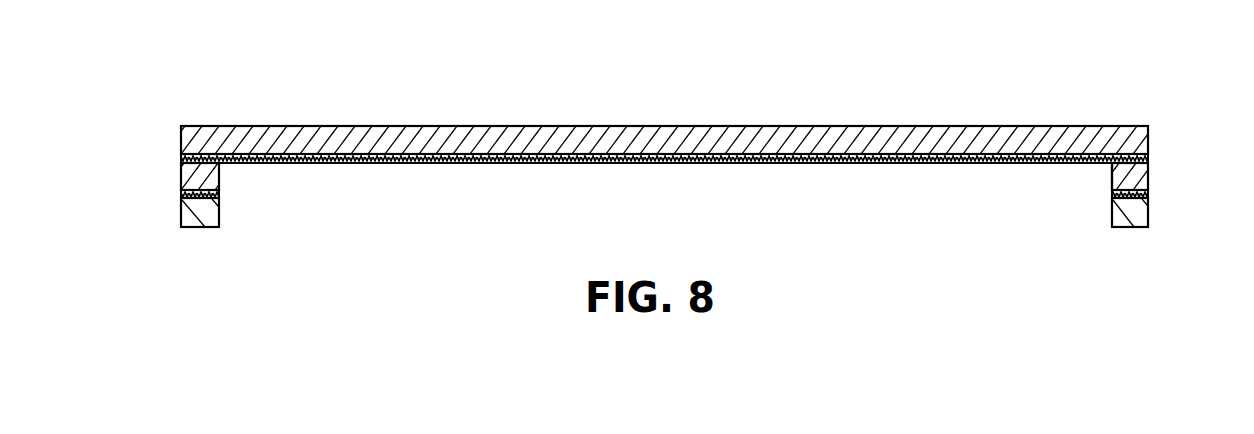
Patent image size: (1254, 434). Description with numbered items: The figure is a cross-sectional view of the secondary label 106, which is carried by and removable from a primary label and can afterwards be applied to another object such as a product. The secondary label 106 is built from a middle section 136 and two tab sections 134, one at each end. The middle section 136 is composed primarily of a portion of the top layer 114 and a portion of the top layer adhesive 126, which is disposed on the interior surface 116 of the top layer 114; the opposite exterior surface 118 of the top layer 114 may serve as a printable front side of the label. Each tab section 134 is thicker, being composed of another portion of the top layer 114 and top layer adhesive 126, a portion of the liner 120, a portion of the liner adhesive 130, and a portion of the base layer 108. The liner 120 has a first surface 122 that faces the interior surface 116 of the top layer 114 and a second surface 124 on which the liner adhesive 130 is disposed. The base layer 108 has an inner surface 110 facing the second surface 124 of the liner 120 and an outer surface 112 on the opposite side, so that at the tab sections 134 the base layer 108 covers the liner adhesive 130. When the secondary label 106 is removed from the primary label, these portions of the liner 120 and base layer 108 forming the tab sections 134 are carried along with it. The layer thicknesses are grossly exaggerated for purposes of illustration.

The secondary label 106 is at (1160, 112).
The base layer 108 is at (181, 209).
The inner surface 110 is at (1124, 188).
The outer surface 112 is at (1127, 227).
The top layer 114 is at (1150, 142).
The interior surface 116 is at (689, 165).
The exterior surface 118 is at (870, 126).
The liner 120 is at (181, 170).
The first surface 122 is at (202, 152).
The second surface 124 is at (196, 198).
The top layer adhesive 126 is at (282, 163).
The liner adhesive 130 is at (181, 194).
The tab section 134 is at (212, 126).
The middle section 136 is at (542, 131).